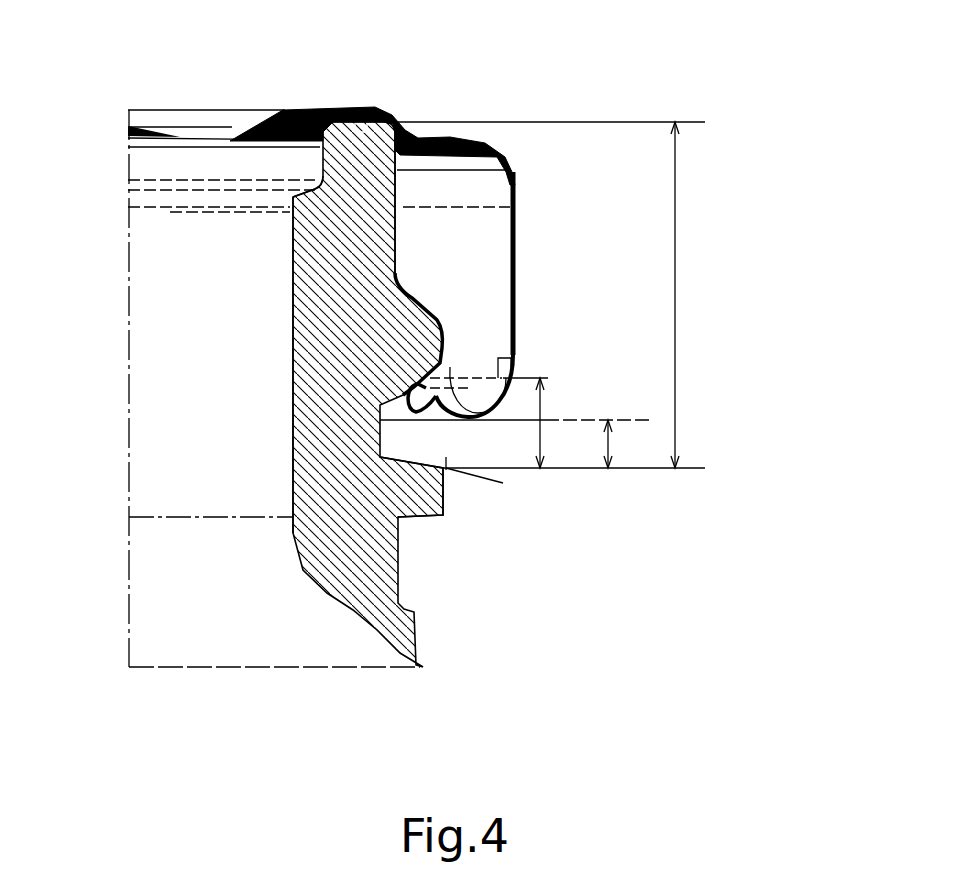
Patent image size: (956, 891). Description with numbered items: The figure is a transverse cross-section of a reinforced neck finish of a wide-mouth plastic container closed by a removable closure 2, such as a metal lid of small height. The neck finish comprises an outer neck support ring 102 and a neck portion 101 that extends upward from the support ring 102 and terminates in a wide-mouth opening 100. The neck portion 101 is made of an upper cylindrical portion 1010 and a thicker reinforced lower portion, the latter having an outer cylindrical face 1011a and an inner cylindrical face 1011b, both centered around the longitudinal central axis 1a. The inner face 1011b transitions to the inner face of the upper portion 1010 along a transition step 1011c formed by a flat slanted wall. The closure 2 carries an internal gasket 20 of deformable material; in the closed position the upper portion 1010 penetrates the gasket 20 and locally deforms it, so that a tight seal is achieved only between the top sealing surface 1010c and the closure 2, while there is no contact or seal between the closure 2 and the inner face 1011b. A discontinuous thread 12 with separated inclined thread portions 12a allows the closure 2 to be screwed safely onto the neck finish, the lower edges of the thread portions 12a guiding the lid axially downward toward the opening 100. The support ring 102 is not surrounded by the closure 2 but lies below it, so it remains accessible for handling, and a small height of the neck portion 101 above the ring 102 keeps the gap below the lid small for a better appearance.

The longitudinal central axis 1a is at (128, 450).
The wide-mouth opening 100 is at (180, 137).
The internal gasket 20 is at (272, 144).
The upper cylindrical portion 1010 is at (397, 113).
The top sealing surface 1010c is at (340, 108).
The outer cylindrical face 1011a is at (397, 258).
The inner cylindrical face 1011b is at (293, 352).
The transition step 1011c is at (293, 199).
The removable closure 2 is at (505, 258).
The discontinuous thread 12 is at (417, 293).
The thread portion 12a is at (410, 350).
The outer neck support ring 102 is at (440, 497).
The neck portion 101 is at (700, 122).